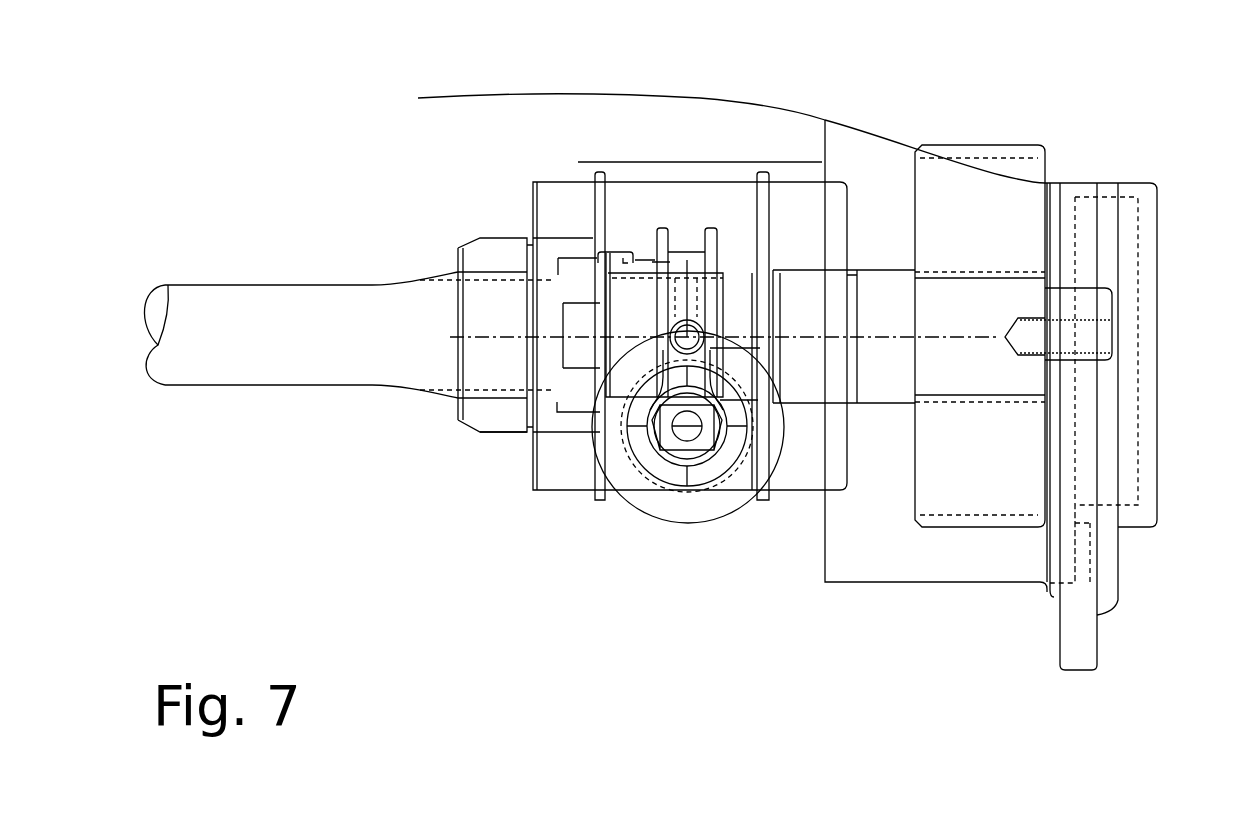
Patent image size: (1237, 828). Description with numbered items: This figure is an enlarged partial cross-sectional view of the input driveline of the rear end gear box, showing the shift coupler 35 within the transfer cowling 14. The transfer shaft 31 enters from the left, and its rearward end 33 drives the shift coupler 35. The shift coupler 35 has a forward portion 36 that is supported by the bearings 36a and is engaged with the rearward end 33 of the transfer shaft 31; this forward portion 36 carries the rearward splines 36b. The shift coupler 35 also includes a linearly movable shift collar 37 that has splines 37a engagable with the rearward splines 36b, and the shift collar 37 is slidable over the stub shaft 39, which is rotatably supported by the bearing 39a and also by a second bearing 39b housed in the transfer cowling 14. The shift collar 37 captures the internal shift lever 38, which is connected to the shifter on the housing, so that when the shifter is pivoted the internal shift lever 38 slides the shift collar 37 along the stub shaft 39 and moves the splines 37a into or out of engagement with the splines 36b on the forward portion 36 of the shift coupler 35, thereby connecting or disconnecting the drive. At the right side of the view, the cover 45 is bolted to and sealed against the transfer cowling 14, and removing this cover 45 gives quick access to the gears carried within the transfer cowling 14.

The transfer cowling 14 is at (963, 575).
The transfer shaft 31 is at (223, 363).
The rearward end of the transfer shaft 33 is at (477, 353).
The shift coupler 35 is at (500, 165).
The forward portion of the shift coupler 36 is at (460, 248).
The bearings 36a is at (508, 423).
The rearward splines 36b is at (638, 262).
The shift collar 37 is at (695, 250).
The splines of the shift collar 37a is at (616, 233).
The internal shift lever 38 is at (720, 350).
The stub shaft 39 is at (960, 215).
The bearing 39a is at (785, 480).
The second bearing 39b is at (1120, 537).
The cover 45 is at (1110, 607).